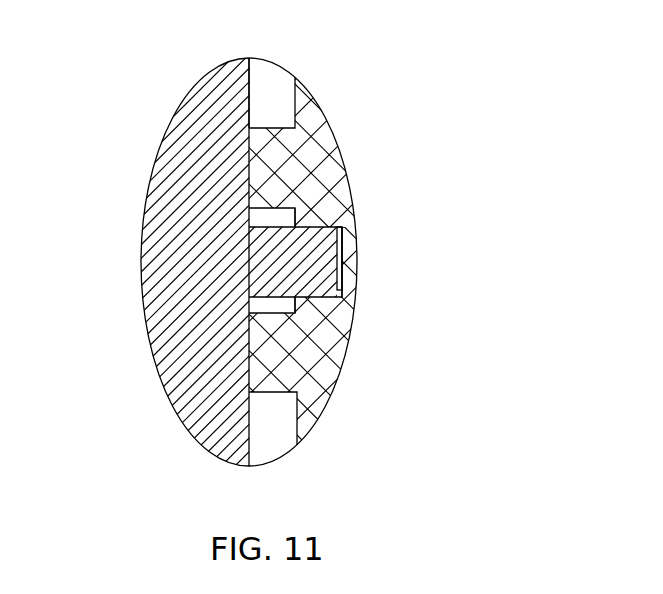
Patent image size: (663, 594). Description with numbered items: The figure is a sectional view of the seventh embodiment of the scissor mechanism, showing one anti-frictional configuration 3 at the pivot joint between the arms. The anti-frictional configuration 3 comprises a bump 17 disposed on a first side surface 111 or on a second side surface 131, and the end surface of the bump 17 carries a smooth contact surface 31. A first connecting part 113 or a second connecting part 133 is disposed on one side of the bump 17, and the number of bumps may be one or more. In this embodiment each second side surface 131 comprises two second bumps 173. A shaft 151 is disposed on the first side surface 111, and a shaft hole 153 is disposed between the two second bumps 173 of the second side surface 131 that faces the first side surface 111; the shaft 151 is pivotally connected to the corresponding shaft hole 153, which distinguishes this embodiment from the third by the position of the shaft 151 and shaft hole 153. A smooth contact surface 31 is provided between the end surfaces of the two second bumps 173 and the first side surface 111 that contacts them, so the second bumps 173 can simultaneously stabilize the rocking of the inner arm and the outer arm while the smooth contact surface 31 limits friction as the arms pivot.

The anti-frictional configuration 3 is at (321, 411).
The bump 17 is at (264, 366).
The smooth contact surface 31 is at (256, 188).
The first side surface 111 is at (256, 80).
The first connecting part 113 is at (230, 285).
The second side surface 131 is at (292, 103).
The second connecting part 133 is at (360, 291).
The shaft 151 is at (300, 258).
The shaft hole 153 is at (344, 264).
The second bump 173 is at (262, 156).